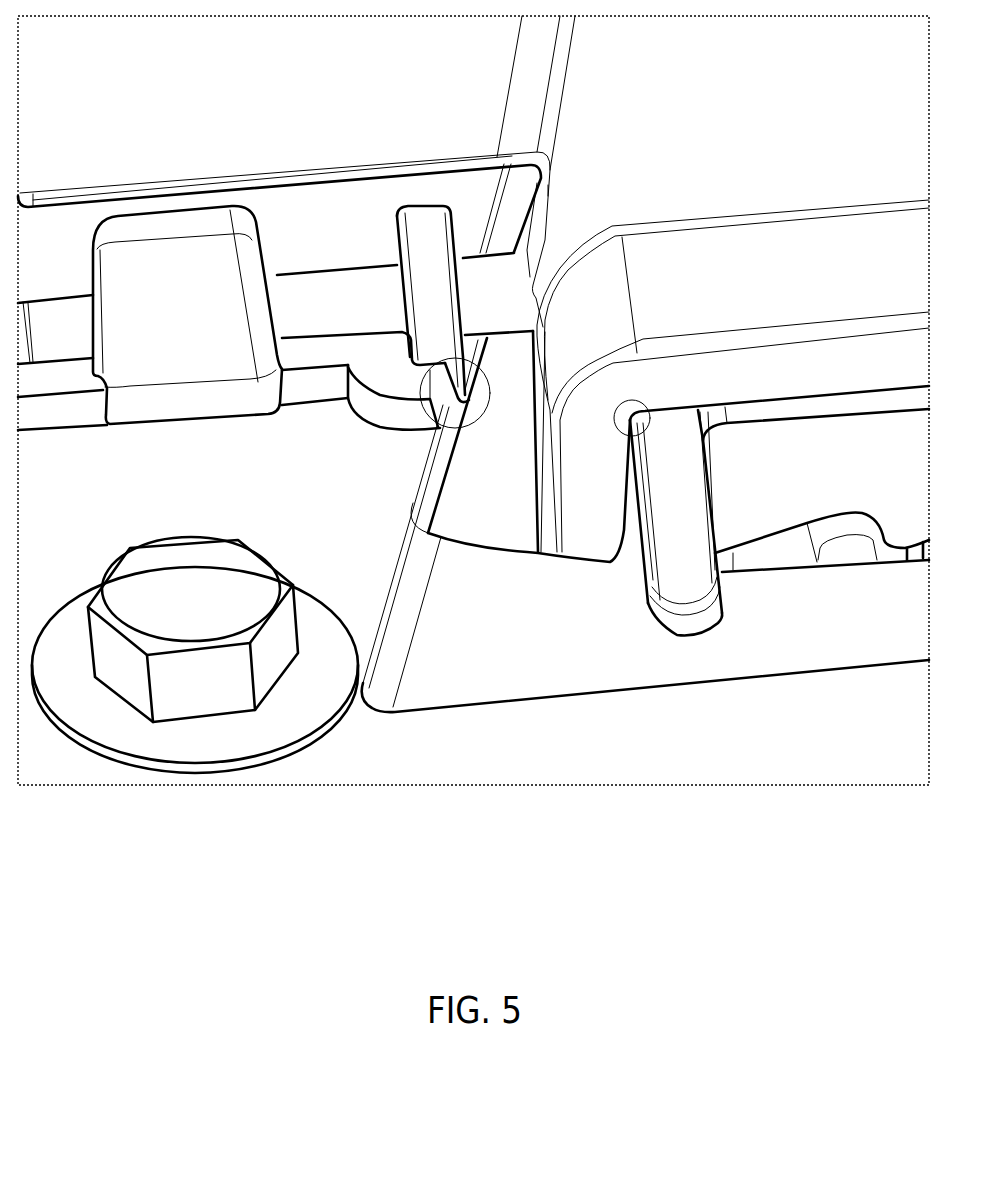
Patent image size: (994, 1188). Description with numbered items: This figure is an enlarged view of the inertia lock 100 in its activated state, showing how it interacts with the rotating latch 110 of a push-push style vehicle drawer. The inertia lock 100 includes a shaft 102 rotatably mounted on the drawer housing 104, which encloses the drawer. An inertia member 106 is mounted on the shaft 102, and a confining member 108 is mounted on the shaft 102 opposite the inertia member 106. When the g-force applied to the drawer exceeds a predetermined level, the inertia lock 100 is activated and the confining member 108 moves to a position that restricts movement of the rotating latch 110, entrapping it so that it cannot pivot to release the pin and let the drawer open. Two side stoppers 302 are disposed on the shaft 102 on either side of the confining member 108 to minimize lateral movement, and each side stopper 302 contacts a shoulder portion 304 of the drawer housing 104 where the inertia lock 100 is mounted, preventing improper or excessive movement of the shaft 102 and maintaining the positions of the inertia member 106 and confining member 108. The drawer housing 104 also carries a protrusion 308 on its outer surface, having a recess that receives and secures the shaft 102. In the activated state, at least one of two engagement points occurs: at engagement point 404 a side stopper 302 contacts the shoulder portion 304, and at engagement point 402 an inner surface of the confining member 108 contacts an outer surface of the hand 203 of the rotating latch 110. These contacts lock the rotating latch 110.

The inertia lock 100 is at (378, 176).
The shaft 102 is at (298, 290).
The drawer housing 104 is at (142, 517).
The inertia member 106 is at (99, 96).
The confining member 108 is at (656, 252).
The rotating latch 110 is at (707, 609).
The hand 203 is at (673, 580).
The side stopper 302 is at (418, 225).
The shoulder portion 304 is at (398, 387).
The protrusion 308 is at (203, 357).
The engagement point 402 is at (641, 401).
The engagement point 404 is at (482, 408).